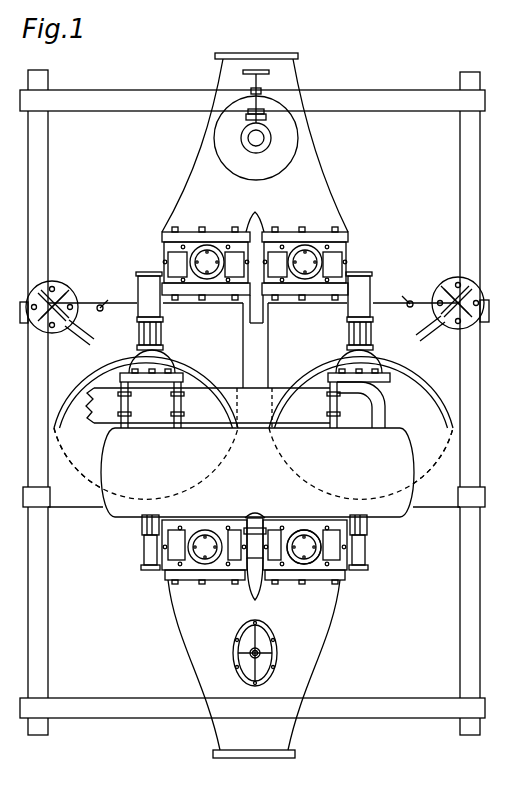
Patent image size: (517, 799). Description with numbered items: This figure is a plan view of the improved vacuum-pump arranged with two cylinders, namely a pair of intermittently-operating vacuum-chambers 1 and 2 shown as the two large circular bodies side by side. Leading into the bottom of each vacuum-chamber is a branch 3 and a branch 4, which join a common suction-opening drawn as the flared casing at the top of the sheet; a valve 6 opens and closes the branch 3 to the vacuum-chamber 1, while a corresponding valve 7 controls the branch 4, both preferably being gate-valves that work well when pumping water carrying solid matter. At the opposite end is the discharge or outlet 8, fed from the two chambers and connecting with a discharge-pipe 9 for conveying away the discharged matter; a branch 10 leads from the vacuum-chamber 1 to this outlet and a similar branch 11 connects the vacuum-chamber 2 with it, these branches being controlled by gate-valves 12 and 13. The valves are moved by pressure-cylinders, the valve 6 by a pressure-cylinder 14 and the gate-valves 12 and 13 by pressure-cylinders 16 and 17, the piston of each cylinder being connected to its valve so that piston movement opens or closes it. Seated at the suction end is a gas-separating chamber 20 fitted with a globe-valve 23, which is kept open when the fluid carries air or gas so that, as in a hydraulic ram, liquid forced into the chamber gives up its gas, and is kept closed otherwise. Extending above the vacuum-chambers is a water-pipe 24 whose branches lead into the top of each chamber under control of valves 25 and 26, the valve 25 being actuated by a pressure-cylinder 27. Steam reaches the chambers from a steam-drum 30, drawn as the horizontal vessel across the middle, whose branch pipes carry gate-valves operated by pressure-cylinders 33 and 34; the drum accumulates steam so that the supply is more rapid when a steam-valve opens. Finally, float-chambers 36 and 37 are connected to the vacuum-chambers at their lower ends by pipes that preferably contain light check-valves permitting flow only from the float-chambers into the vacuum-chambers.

The vacuum-chamber 1 is at (361, 428).
The vacuum-chamber 2 is at (146, 428).
The branch 3 is at (281, 142).
The branch 4 is at (215, 223).
The valve 6 is at (340, 258).
The valve 7 is at (172, 254).
The discharge or outlet 8 is at (254, 765).
The discharge-pipe 9 is at (261, 653).
The branch 10 is at (314, 665).
The branch 11 is at (217, 634).
The gate-valve 12 is at (209, 253).
The gate-valve 13 is at (173, 556).
The pressure-cylinder 14 is at (307, 254).
The pressure-cylinder 16 is at (210, 538).
The pressure-cylinder 17 is at (307, 538).
The gas-separating chamber 20 is at (256, 125).
The globe-valve 23 is at (259, 138).
The water-pipe 24 is at (98, 387).
The valve 25 is at (379, 372).
The valve 26 is at (170, 370).
The pressure-cylinder 27 is at (139, 289).
The steam-drum 30 is at (253, 473).
The pressure-cylinder 33 is at (371, 542).
The pressure-cylinder 34 is at (143, 547).
The float-chamber 36 is at (443, 303).
The float-chamber 37 is at (67, 306).